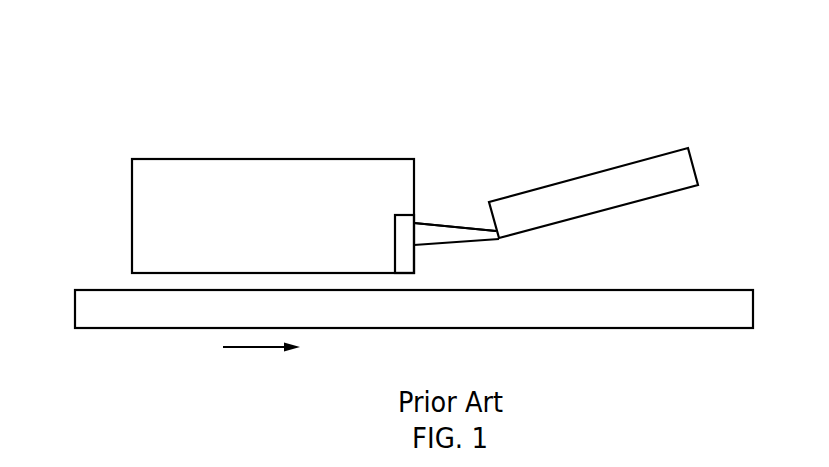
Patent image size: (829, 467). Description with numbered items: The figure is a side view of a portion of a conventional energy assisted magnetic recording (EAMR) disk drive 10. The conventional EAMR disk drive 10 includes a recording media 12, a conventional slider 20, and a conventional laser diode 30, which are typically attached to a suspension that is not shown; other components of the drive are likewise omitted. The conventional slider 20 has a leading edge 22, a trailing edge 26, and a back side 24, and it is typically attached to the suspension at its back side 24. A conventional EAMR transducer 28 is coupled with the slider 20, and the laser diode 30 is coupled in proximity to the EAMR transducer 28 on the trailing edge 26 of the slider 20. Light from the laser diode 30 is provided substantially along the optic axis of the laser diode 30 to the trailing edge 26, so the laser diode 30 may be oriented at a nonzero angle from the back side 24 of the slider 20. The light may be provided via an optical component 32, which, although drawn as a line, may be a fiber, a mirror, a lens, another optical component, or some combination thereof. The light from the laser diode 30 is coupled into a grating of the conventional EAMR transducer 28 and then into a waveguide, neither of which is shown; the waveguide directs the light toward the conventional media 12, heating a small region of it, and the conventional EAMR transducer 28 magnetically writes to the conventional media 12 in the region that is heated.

The conventional energy assisted magnetic recording disk drive 10 is at (468, 40).
The recording media 12 is at (753, 308).
The conventional slider 20 is at (132, 197).
The leading edge 22 is at (71, 218).
The back side 24 is at (238, 127).
The trailing edge 26 is at (431, 168).
The conventional EAMR transducer 28 is at (415, 224).
The conventional laser diode 30 is at (642, 203).
The optical component 32 is at (458, 239).